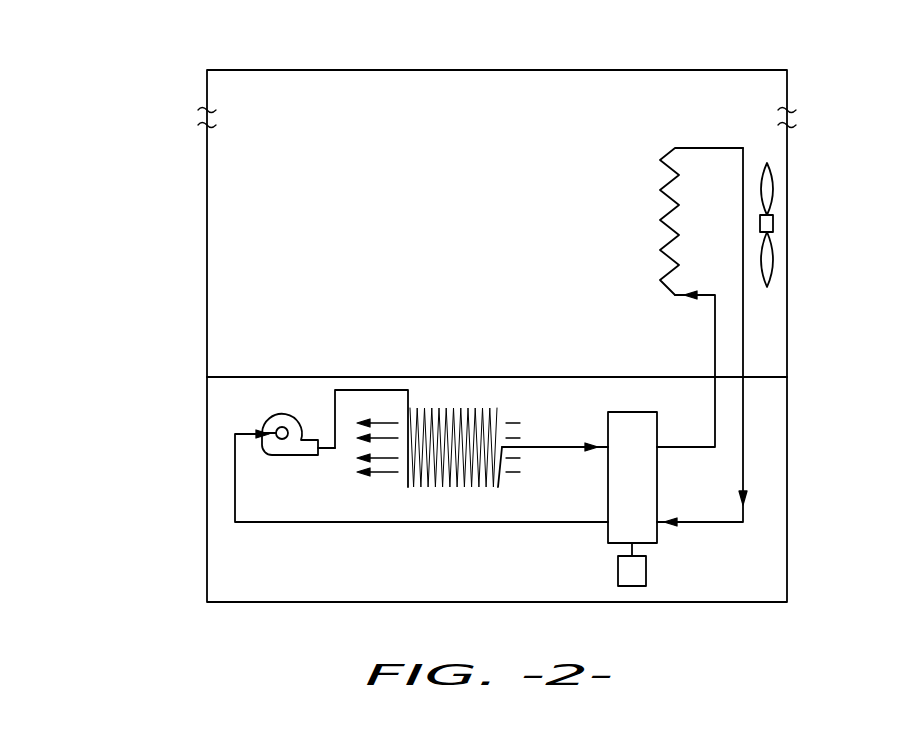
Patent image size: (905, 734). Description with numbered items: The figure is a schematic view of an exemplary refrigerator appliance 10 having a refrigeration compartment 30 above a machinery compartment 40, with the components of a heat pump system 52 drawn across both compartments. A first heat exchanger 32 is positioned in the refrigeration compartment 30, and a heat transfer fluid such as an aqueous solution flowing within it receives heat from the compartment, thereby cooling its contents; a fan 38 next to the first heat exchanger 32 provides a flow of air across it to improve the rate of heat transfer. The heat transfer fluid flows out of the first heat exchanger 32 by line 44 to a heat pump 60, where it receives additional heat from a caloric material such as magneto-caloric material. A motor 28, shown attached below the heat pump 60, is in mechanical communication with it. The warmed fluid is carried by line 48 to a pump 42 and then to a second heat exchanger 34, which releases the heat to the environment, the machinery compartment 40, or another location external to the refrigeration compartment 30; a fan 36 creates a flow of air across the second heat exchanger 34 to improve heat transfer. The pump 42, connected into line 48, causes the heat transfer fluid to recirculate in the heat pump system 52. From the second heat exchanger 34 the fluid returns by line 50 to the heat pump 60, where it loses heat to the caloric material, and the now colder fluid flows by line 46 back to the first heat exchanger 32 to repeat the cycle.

The refrigerator appliance 10 is at (145, 170).
The refrigeration compartment 30 is at (492, 108).
The machinery compartment 40 is at (242, 407).
The line 48 is at (338, 420).
The pump 42 is at (275, 414).
The fan 36 is at (393, 430).
The second heat exchanger 34 is at (470, 410).
The heat pump system 52 is at (425, 366).
The line 50 is at (548, 447).
The heat pump 60 is at (632, 412).
The motor 28 is at (617, 572).
The first heat exchanger 32 is at (662, 193).
The line 46 is at (715, 352).
The line 44 is at (745, 343).
The fan 38 is at (773, 193).